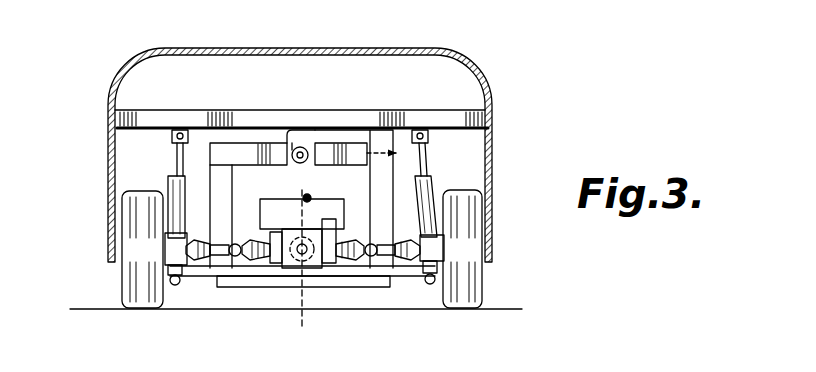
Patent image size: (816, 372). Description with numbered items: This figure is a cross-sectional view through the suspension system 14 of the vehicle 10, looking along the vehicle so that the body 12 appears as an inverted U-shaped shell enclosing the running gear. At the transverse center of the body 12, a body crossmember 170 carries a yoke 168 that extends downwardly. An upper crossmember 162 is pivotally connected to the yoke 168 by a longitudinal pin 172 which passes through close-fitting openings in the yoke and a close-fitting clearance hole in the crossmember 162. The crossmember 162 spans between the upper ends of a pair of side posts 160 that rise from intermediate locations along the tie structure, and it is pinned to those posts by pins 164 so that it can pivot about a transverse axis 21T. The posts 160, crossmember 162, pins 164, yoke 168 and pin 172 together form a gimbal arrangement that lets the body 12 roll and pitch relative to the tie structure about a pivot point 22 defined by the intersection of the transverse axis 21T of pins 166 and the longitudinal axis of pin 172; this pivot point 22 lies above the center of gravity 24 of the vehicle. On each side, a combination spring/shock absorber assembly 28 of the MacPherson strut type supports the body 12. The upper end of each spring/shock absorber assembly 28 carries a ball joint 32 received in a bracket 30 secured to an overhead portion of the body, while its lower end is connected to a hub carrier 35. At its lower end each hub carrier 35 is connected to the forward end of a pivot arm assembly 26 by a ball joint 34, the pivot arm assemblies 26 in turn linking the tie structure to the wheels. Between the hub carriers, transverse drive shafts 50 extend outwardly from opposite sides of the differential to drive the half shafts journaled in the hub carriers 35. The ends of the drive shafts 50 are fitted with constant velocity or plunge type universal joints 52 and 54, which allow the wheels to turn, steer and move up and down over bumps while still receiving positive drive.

The vehicle 10 is at (100, 82).
The body 12 is at (496, 157).
The suspension system 14 is at (386, 291).
The transverse axis 21T is at (356, 146).
The pivot point 22 is at (308, 140).
The center of gravity 24 is at (310, 198).
The pivot arm assemblies 26 is at (228, 291).
The spring/shock absorber assemblies 28 is at (430, 192).
The brackets 30 is at (432, 137).
The ball joints 32 is at (420, 138).
The ball joints 34 is at (430, 285).
The hub carriers 35 is at (433, 247).
The drive shafts 50 is at (375, 272).
The universal joint 52 is at (372, 244).
The universal joint 54 is at (404, 244).
The side posts 160 is at (187, 209).
The upper crossmember 162 is at (247, 147).
The pins 164 is at (236, 153).
The pins 166 is at (200, 155).
The yoke 168 is at (275, 133).
The body crossmember 170 is at (140, 112).
The longitudinal pin 172 is at (276, 178).